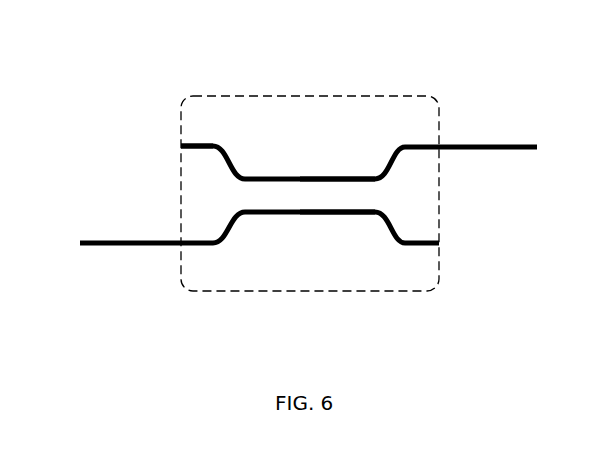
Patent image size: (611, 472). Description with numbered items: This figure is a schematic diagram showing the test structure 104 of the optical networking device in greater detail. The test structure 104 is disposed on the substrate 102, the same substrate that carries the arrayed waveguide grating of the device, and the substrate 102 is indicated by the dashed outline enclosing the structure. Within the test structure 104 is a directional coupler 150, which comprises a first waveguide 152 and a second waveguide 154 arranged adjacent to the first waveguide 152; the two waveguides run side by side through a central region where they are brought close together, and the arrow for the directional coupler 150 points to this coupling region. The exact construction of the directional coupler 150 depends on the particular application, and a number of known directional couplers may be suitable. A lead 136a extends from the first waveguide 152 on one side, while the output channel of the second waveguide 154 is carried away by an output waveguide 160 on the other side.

The substrate 102 is at (266, 276).
The test structure 104 is at (236, 105).
The directional coupler 150 is at (369, 167).
The first waveguide 152 is at (325, 213).
The second waveguide 154 is at (288, 179).
The output waveguide 160 is at (505, 150).
The input lead 136a is at (117, 245).